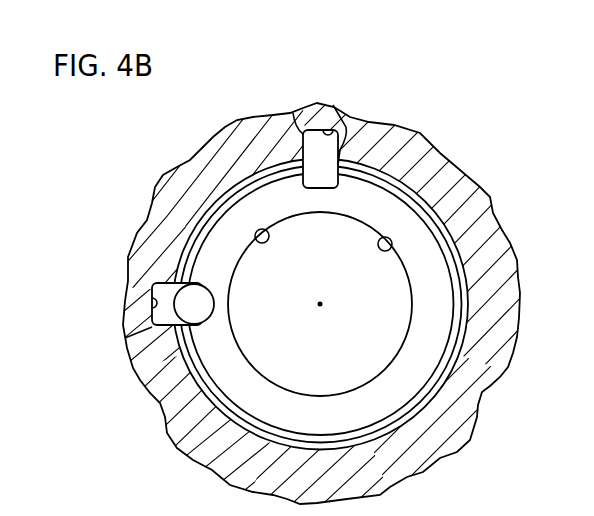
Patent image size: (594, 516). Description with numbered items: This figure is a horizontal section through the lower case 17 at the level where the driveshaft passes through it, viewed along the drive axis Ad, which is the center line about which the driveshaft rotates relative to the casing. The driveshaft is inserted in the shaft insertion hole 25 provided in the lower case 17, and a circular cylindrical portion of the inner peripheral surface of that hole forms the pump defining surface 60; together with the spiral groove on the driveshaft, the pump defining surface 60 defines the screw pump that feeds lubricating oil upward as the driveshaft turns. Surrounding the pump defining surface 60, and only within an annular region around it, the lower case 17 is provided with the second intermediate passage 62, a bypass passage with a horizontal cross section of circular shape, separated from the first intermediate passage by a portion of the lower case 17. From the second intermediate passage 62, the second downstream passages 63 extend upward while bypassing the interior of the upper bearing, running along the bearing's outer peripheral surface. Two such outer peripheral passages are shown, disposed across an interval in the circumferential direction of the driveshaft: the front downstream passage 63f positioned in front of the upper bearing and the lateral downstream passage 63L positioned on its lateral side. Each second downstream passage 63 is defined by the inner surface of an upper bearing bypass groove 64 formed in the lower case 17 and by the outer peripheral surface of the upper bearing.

The lower case 17 is at (482, 387).
The shaft insertion hole 25 is at (256, 240).
The pump defining surface 60 is at (392, 246).
The second intermediate passage 62 is at (200, 309).
The second downstream passage 63 is at (303, 130).
The lateral downstream passage 63L is at (360, 143).
The front downstream passage 63f is at (123, 336).
The upper bearing bypass groove 64 is at (329, 127).
The drive axis Ad is at (322, 303).